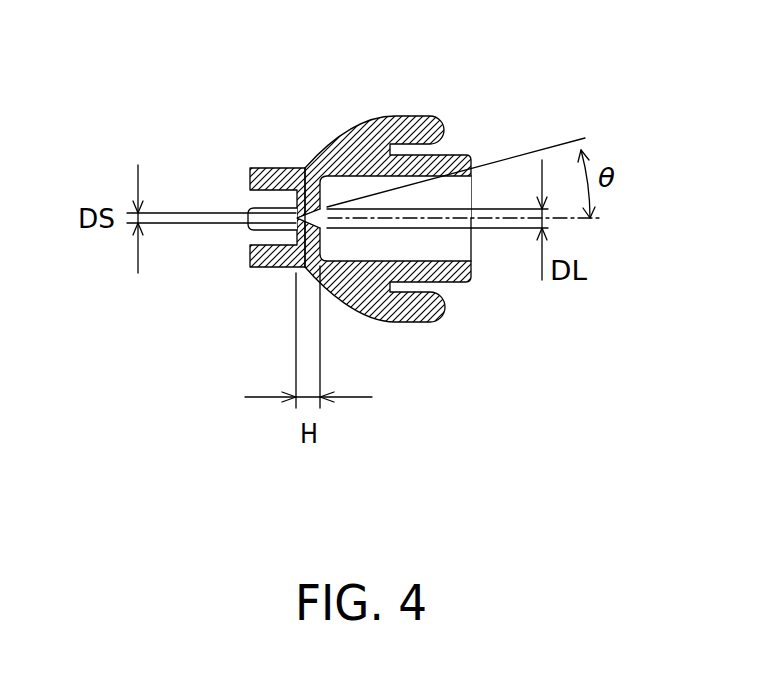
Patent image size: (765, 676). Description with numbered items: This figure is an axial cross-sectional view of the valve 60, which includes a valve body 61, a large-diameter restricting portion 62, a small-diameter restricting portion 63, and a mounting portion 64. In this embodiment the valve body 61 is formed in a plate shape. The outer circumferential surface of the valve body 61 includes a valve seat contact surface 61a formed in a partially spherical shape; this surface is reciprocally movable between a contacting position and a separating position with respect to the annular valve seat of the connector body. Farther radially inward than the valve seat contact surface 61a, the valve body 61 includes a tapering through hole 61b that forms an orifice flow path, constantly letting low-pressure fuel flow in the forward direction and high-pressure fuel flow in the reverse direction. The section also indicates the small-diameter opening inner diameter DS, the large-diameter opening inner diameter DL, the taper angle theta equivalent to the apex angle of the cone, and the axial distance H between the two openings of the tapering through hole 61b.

The valve 60 is at (347, 202).
The valve body 61 is at (295, 208).
The valve seat contact surface 61a is at (305, 164).
The tapering through hole 61b is at (297, 168).
The large-diameter restricting portion 62 is at (399, 125).
The small-diameter restricting portion 63 is at (263, 270).
The mounting portion 64 is at (457, 287).